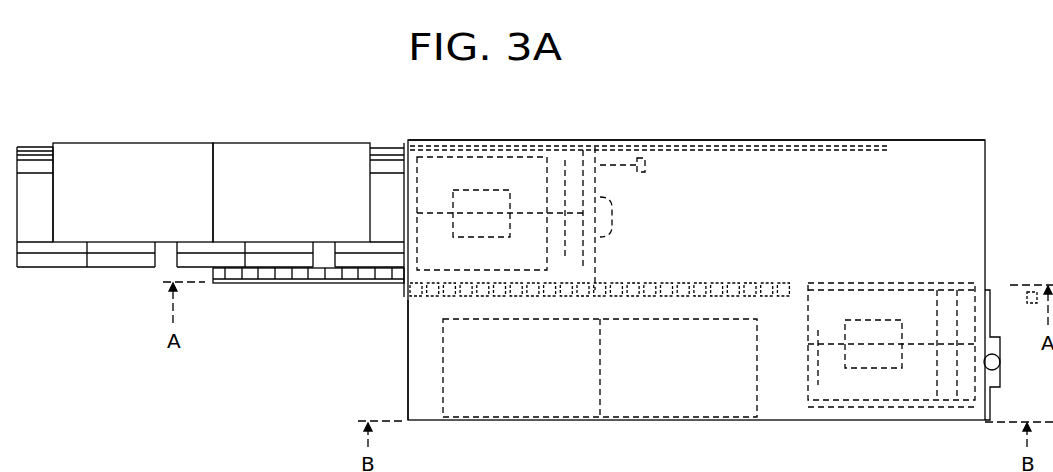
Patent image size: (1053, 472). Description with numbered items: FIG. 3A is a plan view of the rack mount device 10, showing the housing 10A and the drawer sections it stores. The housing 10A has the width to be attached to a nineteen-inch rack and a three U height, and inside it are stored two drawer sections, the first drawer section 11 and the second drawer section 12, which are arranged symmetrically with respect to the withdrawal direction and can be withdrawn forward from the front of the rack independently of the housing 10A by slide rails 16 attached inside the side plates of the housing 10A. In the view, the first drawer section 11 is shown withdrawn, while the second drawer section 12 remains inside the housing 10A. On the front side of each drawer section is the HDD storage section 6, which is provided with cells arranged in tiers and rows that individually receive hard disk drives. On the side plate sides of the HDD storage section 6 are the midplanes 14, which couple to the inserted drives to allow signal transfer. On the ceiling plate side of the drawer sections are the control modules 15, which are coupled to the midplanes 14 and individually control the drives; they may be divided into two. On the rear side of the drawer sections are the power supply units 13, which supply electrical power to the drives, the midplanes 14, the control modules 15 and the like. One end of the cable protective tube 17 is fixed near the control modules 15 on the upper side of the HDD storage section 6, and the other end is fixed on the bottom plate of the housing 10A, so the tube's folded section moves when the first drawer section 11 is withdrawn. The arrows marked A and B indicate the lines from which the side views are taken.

The rack mount device 10 is at (828, 123).
The housing 10A is at (932, 142).
The first drawer section 11 is at (262, 142).
The second drawer section 12 is at (407, 360).
The power supply unit 13 is at (525, 175).
The midplane 14 is at (44, 145).
The control module 15 is at (117, 177).
The slide rail 16 is at (740, 152).
The cable protective tube 17 is at (280, 285).
The HDD storage section 6 is at (27, 243).